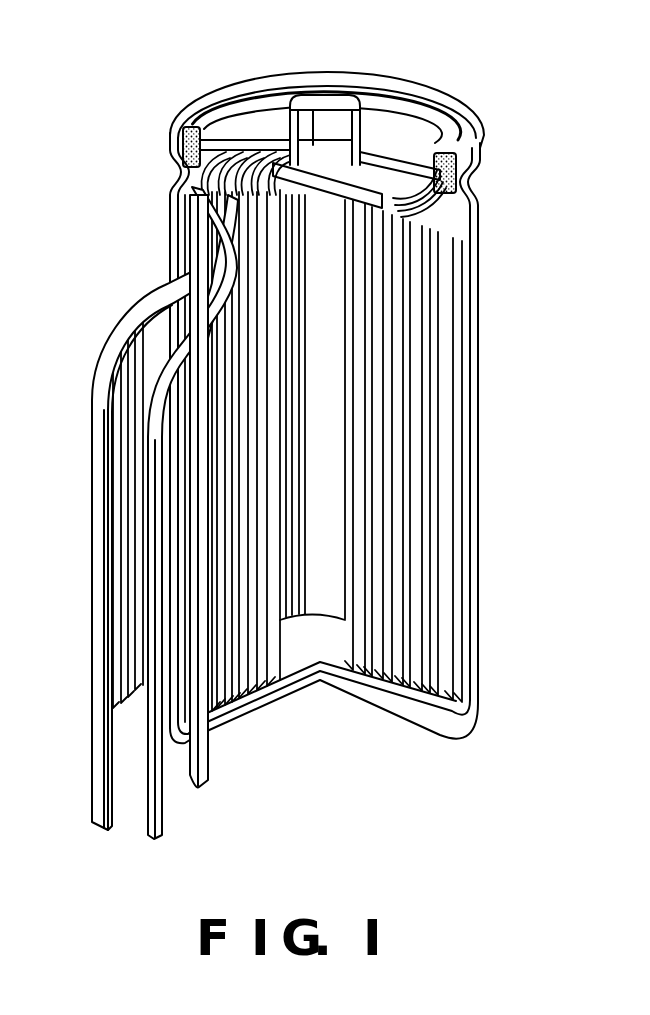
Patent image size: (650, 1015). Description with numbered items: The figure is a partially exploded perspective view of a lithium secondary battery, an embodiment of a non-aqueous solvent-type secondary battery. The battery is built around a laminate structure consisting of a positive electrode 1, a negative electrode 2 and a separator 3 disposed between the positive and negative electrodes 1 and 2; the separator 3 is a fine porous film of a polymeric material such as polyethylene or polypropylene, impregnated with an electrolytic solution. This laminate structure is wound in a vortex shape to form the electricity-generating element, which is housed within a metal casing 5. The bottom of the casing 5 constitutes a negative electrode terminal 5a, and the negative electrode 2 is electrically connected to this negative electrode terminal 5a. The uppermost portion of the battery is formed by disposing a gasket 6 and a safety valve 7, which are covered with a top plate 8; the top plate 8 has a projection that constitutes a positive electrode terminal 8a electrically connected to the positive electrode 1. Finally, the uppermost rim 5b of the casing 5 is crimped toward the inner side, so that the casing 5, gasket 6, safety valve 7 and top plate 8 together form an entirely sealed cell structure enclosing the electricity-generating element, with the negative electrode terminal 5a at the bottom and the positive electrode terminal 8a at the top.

The positive electrode 1 is at (205, 765).
The negative electrode 2 is at (98, 481).
The separator 3 is at (157, 828).
The metal casing 5 is at (470, 548).
The negative electrode terminal 5a is at (248, 712).
The uppermost rim 5b is at (458, 130).
The gasket 6 is at (180, 132).
The safety valve 7 is at (310, 117).
The top plate 8 is at (393, 140).
The positive electrode terminal 8a is at (328, 98).